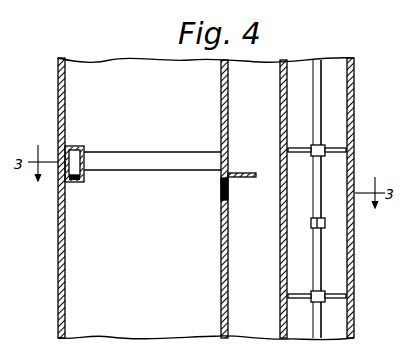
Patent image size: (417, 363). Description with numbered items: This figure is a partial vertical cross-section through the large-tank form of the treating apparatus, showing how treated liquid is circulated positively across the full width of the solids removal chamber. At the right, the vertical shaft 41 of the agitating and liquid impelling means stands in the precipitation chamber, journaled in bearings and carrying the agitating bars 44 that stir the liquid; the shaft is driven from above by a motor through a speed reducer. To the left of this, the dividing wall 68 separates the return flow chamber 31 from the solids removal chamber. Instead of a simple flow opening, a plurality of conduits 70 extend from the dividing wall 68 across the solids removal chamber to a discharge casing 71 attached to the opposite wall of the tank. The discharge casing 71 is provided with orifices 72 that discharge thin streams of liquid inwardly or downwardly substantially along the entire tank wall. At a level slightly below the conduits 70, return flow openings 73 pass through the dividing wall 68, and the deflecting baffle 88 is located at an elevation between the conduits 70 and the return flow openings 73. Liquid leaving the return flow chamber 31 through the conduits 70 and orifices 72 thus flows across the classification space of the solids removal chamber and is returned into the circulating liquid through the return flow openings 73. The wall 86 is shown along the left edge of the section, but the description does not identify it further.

The return flow chamber 31 is at (240, 110).
The shaft 41 is at (322, 83).
The agitating bars 44 is at (326, 227).
The dividing wall 68 is at (222, 80).
The conduits 70 is at (118, 156).
The discharge casing 71 is at (73, 151).
The orifices 72 is at (68, 183).
The return flow openings 73 is at (222, 200).
The outer wall 86 is at (69, 210).
The deflecting baffle 88 is at (246, 172).